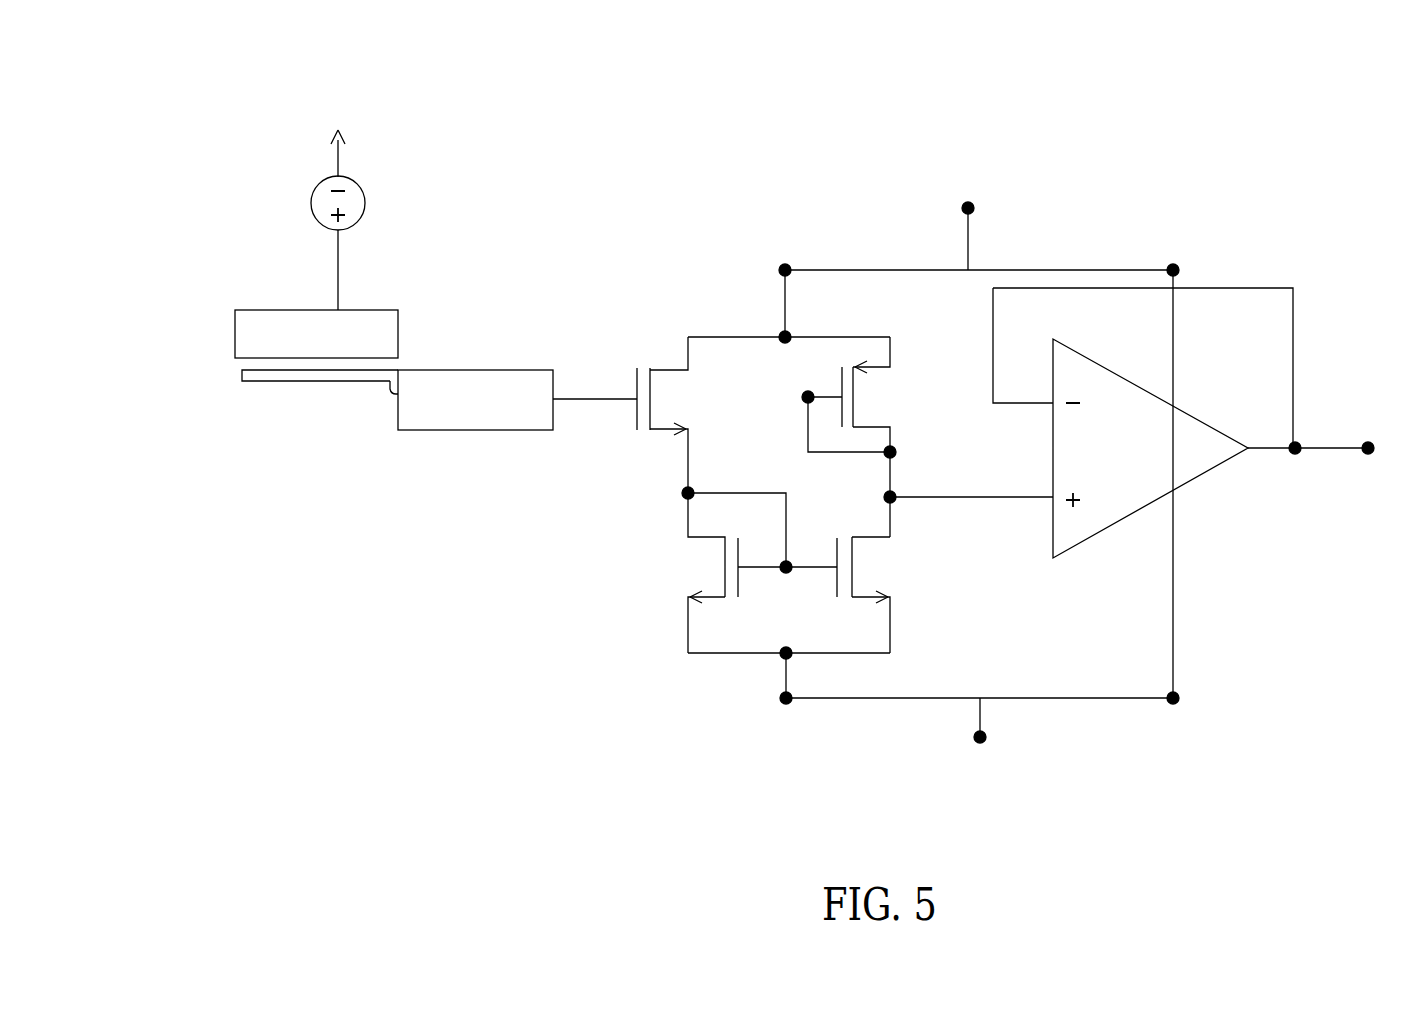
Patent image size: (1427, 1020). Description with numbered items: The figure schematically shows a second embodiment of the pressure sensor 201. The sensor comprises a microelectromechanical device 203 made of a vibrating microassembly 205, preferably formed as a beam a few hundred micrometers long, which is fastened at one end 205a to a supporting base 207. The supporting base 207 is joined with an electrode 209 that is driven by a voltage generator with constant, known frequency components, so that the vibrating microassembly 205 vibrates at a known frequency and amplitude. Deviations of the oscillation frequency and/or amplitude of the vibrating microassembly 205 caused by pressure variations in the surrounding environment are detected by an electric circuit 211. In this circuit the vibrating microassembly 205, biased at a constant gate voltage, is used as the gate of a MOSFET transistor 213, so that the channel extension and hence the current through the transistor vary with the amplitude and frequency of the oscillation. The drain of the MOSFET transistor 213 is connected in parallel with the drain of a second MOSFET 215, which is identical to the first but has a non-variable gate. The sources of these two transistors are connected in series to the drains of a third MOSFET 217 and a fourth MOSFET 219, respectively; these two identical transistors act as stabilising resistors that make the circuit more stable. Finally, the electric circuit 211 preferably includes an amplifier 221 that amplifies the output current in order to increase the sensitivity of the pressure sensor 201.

The pressure sensor 201 is at (530, 750).
The microelectromechanical device 203 is at (383, 465).
The vibrating microassembly 205 is at (302, 381).
The end of the vibrating microassembly 205a is at (399, 390).
The supporting base 207 is at (453, 410).
The electrode 209 is at (240, 340).
The electric circuit 211 is at (1262, 218).
The MOSFET transistor 213 is at (703, 365).
The second MOSFET 215 is at (905, 380).
The third MOSFET 217 is at (728, 605).
The fourth MOSFET 219 is at (912, 583).
The amplifier 221 is at (1157, 474).